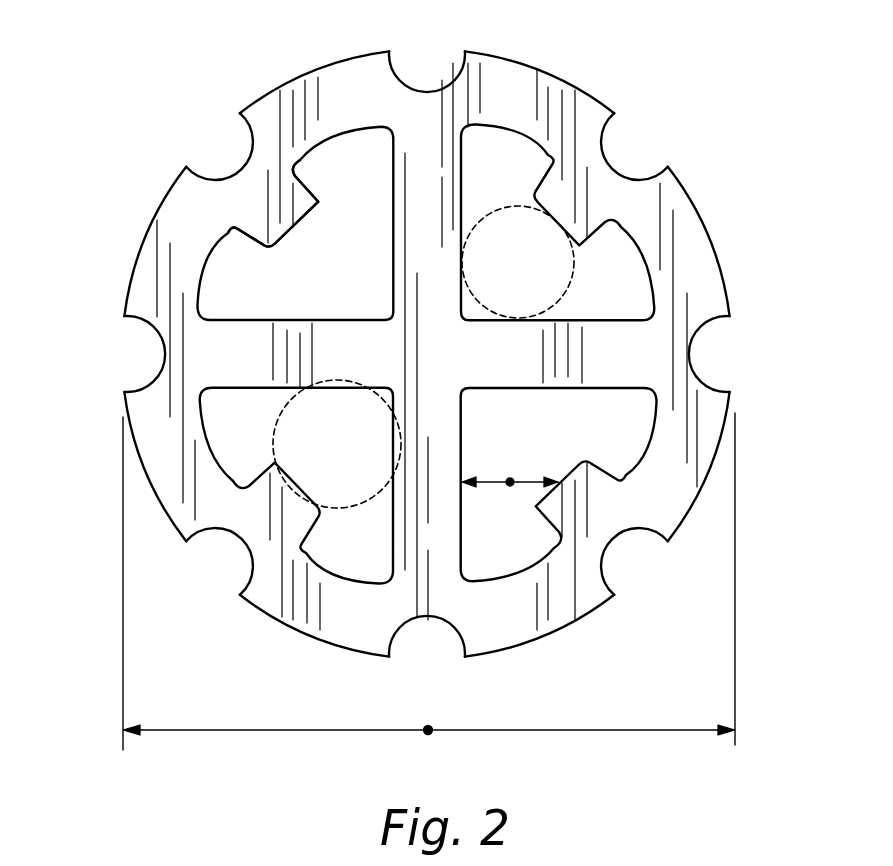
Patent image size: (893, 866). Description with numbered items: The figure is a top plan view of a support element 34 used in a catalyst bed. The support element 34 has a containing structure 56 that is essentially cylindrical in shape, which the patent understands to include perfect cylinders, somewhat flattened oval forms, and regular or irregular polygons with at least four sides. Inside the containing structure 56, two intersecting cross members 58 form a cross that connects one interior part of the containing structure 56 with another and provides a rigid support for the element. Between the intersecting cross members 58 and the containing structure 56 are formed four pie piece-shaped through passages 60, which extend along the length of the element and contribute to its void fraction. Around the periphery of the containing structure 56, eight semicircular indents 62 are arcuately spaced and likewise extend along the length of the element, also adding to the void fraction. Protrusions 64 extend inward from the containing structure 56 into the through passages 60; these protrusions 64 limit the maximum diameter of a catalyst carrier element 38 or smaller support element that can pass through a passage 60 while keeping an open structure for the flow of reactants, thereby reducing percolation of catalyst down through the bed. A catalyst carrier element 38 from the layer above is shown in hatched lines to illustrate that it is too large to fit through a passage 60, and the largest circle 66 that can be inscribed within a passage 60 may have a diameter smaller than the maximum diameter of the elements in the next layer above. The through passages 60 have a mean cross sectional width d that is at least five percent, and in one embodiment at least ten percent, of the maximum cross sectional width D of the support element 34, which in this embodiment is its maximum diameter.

The support element 34 is at (706, 124).
The catalyst carrier element 38 is at (360, 505).
The containing structure 56 is at (525, 597).
The cross members 58 is at (417, 203).
The through passages 60 is at (502, 183).
The peripheral indents 62 is at (700, 343).
The protrusions 64 is at (284, 213).
The largest inscribed circle 66 is at (570, 294).
The mean cross sectional width of through passage d is at (510, 478).
The maximum cross sectional width of support element D is at (428, 734).